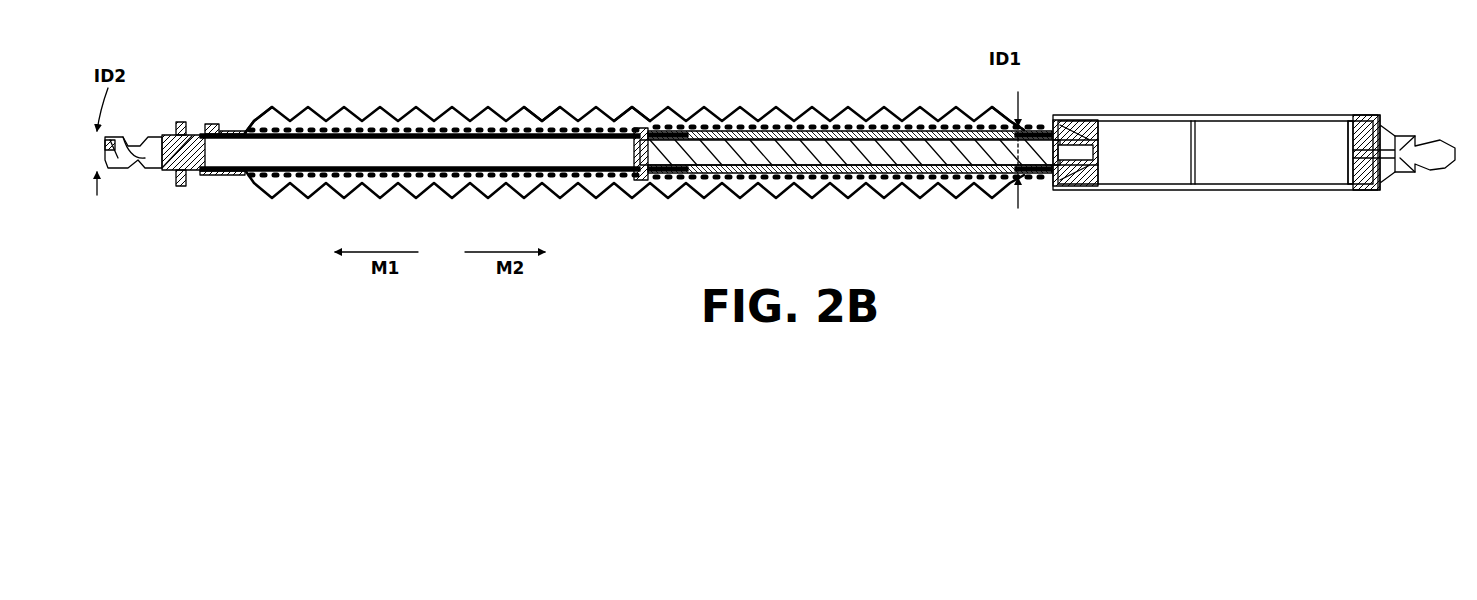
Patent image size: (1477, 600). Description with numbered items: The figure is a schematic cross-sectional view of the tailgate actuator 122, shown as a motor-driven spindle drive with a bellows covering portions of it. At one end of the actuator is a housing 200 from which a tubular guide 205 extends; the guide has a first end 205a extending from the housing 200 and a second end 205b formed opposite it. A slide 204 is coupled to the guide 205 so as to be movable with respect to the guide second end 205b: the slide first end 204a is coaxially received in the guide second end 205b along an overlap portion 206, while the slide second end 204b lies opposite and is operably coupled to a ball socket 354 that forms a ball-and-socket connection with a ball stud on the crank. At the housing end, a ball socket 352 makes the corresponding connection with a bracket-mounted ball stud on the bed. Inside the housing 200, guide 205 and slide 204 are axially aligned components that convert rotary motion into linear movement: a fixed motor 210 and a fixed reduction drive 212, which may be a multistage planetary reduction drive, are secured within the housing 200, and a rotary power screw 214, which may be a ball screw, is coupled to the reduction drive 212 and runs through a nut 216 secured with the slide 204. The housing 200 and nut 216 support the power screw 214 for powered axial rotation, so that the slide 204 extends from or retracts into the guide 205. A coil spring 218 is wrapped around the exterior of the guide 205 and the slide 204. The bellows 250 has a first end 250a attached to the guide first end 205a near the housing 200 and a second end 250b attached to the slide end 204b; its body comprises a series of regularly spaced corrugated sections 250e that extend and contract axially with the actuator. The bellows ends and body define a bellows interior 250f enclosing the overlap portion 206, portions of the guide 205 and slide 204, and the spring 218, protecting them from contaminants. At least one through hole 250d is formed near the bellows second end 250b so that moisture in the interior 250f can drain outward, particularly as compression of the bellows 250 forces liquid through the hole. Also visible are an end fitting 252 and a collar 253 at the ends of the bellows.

The tailgate actuator 122 is at (1323, 96).
The housing 200 is at (1194, 114).
The slide 204 is at (426, 108).
The slide first end 204a is at (645, 176).
The slide second end 204b is at (190, 173).
The tubular guide 205 is at (813, 128).
The guide first end 205a is at (1022, 180).
The guide second end 205b is at (682, 178).
The overlap portion 206 is at (687, 121).
The motor 210 is at (1277, 138).
The reduction drive 212 is at (1143, 130).
The power screw 214 is at (772, 150).
The nut 216 is at (682, 125).
The spring 218 is at (368, 128).
The bellows 250 is at (918, 105).
The bellows first end 250a is at (1030, 124).
The bellows second end 250b is at (229, 130).
The through hole 250d is at (252, 118).
The corrugated sections 250e is at (541, 106).
The bellows interior 250f is at (628, 107).
The proximal connector 252 is at (1070, 118).
The distal collar 253 is at (212, 124).
The ball socket 352 is at (1418, 149).
The ball socket 354 is at (134, 150).